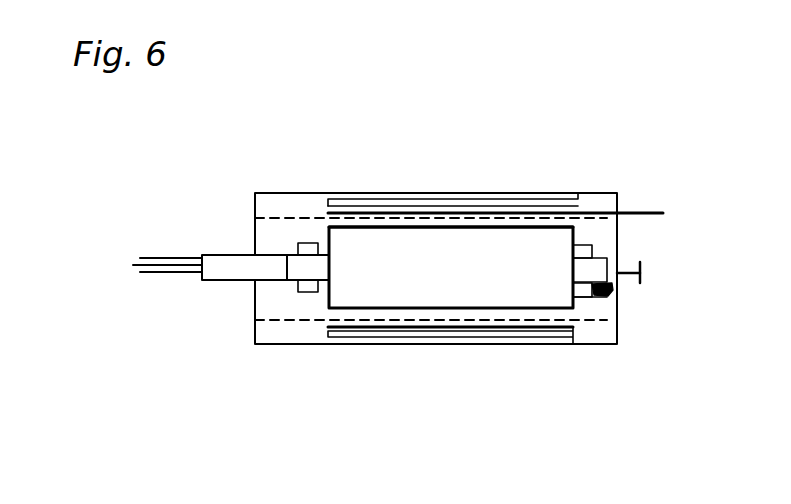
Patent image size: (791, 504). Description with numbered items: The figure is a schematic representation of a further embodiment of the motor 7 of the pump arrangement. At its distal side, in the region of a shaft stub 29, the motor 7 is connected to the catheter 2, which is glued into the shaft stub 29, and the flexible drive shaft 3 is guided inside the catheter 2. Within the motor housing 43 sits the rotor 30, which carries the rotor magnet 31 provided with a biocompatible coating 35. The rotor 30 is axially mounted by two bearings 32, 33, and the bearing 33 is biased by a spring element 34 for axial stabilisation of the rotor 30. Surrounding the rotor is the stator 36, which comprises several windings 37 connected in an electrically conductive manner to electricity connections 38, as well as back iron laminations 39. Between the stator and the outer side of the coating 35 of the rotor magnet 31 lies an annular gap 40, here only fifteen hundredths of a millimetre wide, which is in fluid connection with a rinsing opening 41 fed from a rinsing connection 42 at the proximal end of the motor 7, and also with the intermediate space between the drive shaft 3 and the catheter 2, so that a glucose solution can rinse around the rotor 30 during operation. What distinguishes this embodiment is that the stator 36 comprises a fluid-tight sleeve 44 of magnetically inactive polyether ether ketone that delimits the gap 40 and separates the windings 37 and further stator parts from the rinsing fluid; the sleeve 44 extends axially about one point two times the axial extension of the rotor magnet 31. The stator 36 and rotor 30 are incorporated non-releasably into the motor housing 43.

The motor 7 is at (609, 124).
The catheter 2 is at (162, 273).
The flexible drive shaft 3 is at (135, 268).
The shaft stub 29 is at (225, 270).
The rotor 30 is at (540, 423).
The rotor magnet 31 is at (445, 295).
The bearing 32 is at (312, 243).
The bearing 33 is at (580, 297).
The spring element 34 is at (617, 297).
The coating 35 is at (475, 310).
The stator 36 is at (423, 128).
The windings 37 is at (402, 215).
The electricity connections 38 is at (650, 213).
The back iron laminations 39 is at (373, 200).
The gap 40 is at (488, 222).
The rinsing opening 41 is at (617, 277).
The rinsing connection 42 is at (640, 263).
The motor housing 43 is at (273, 344).
The fluid-tight sleeve 44 is at (437, 220).